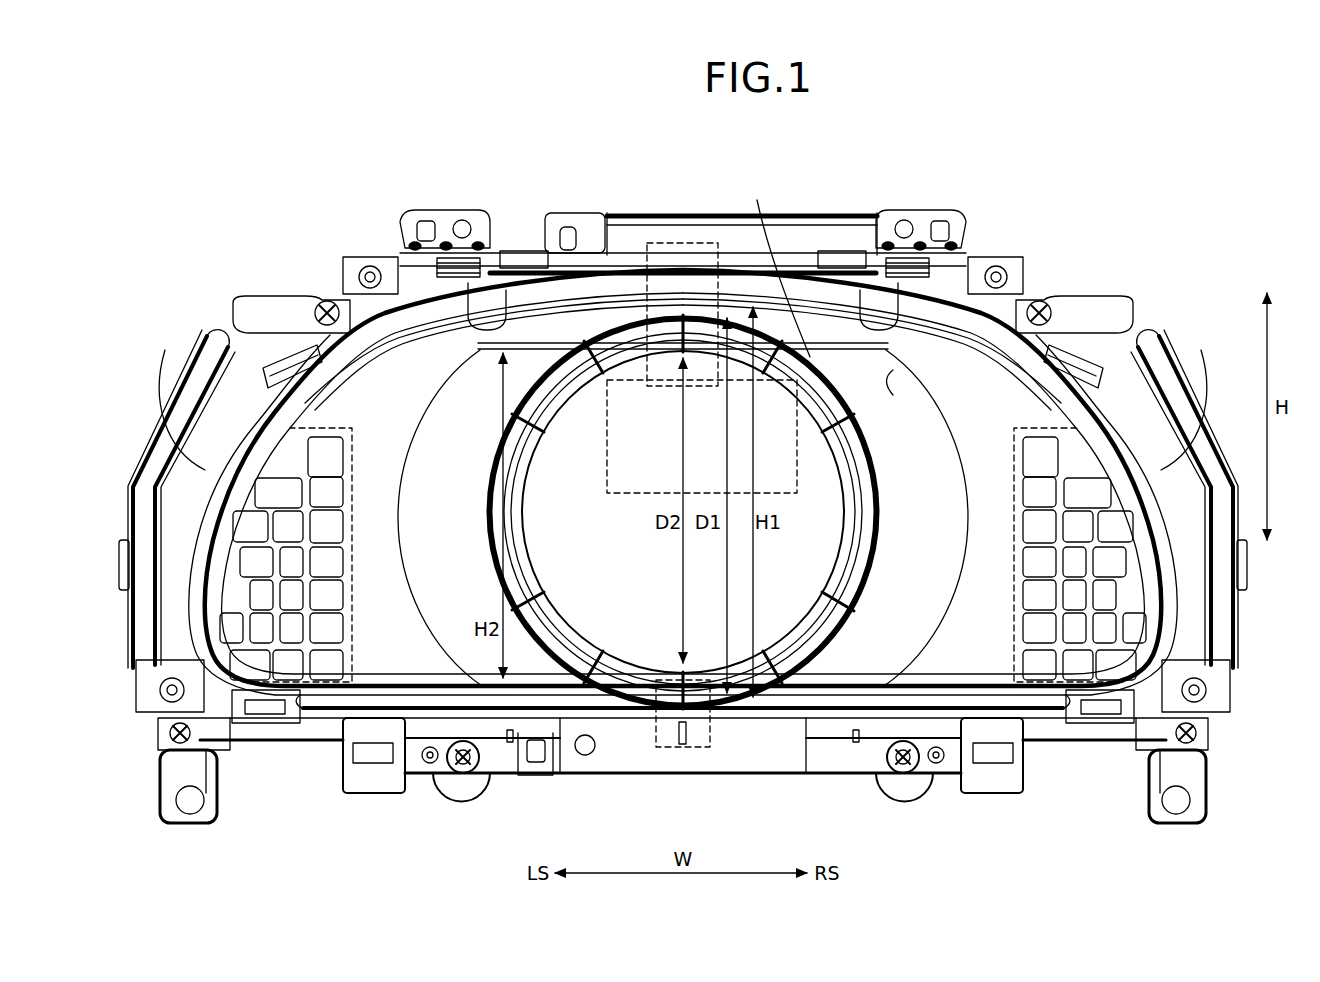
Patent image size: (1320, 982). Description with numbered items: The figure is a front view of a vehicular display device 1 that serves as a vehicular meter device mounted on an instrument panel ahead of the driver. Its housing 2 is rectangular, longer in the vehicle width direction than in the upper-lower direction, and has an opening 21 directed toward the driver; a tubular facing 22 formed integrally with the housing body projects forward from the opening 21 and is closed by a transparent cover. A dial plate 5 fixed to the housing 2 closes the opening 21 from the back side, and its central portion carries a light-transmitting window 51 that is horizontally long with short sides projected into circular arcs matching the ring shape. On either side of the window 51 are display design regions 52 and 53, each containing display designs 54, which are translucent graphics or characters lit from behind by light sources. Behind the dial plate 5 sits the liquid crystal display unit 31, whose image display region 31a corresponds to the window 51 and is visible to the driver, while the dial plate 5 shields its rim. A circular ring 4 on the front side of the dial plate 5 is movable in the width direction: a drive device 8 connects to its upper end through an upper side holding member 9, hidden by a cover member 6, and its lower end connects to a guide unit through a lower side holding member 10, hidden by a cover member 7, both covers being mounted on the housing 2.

The vehicular display device 1 is at (350, 146).
The housing 2 is at (372, 248).
The ring 4 is at (562, 272).
The dial plate 5 is at (992, 370).
The cover member 6 is at (508, 300).
The cover member 7 is at (567, 690).
The drive device 8 is at (627, 318).
The upper side holding member 9 is at (700, 243).
The lower side holding member 10 is at (700, 748).
The opening 21 is at (465, 255).
The facing 22 is at (670, 305).
The liquid crystal display unit 31 is at (831, 370).
The image display region 31a is at (772, 265).
The window 51 is at (893, 370).
The display design region 52 is at (330, 428).
The display design region 53 is at (1030, 428).
The display designs 54 is at (250, 503).